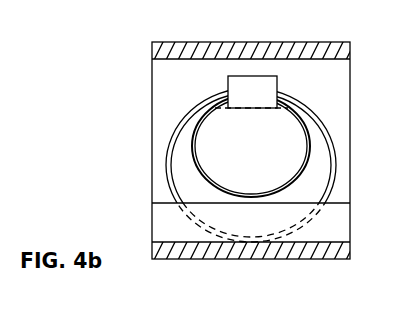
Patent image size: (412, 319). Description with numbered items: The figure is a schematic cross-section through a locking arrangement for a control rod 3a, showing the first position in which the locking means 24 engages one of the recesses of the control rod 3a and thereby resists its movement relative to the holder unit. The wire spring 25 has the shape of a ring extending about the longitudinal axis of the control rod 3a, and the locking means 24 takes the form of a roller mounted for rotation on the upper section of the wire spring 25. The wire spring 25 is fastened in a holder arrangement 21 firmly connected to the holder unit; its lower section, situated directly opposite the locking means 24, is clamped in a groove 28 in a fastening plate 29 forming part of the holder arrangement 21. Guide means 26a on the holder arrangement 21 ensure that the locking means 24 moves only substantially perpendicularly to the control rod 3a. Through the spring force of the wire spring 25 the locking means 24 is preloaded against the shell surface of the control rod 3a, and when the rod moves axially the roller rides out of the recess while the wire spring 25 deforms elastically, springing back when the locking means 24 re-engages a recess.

The holder arrangement 21 is at (347, 50).
The locking means 24 is at (228, 82).
The control rod 3a is at (287, 116).
The wire spring 25 is at (338, 160).
The guide means 26a is at (152, 90).
The groove 28 is at (213, 227).
The fastening plate 29 is at (158, 212).